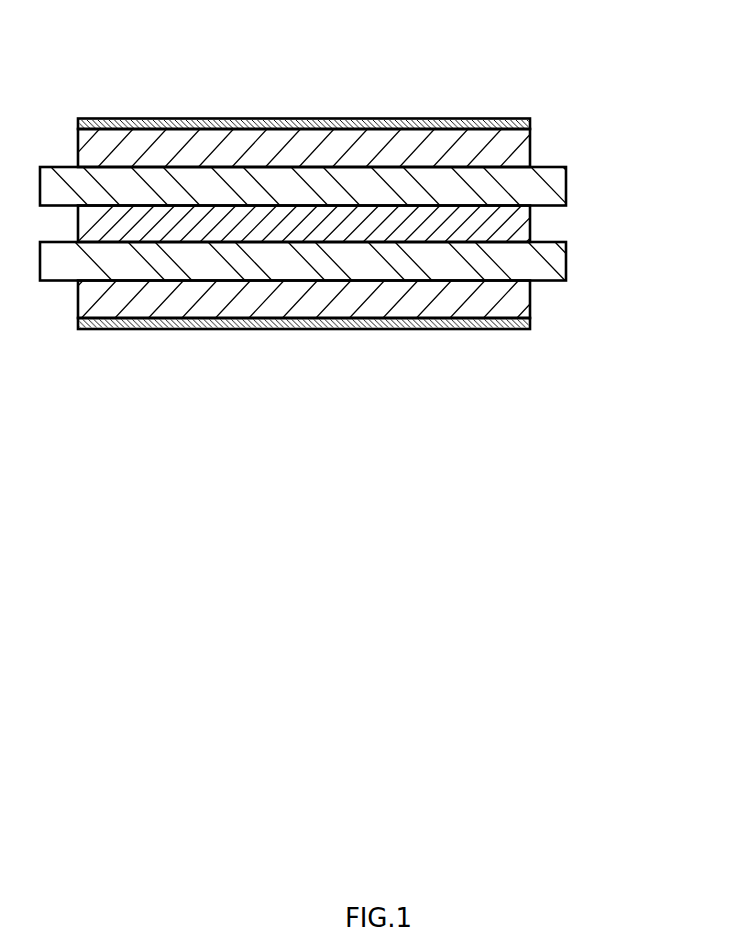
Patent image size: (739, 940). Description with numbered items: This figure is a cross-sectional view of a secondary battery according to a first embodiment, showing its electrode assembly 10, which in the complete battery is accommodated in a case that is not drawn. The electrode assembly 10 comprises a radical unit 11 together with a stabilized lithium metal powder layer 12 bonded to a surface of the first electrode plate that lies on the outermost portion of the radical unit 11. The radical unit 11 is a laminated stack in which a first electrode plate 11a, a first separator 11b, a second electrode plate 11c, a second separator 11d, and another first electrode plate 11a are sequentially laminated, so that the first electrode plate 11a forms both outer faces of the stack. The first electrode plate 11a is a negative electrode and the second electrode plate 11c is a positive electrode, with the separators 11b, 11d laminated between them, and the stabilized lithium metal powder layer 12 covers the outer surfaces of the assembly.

The electrode assembly 10 is at (448, 85).
The radical unit 11 is at (373, 223).
The first electrode plate 11a is at (524, 150).
The first separator 11b is at (566, 181).
The second electrode plate 11c is at (524, 222).
The second separator 11d is at (338, 261).
The stabilized lithium metal powder layer 12 is at (527, 122).